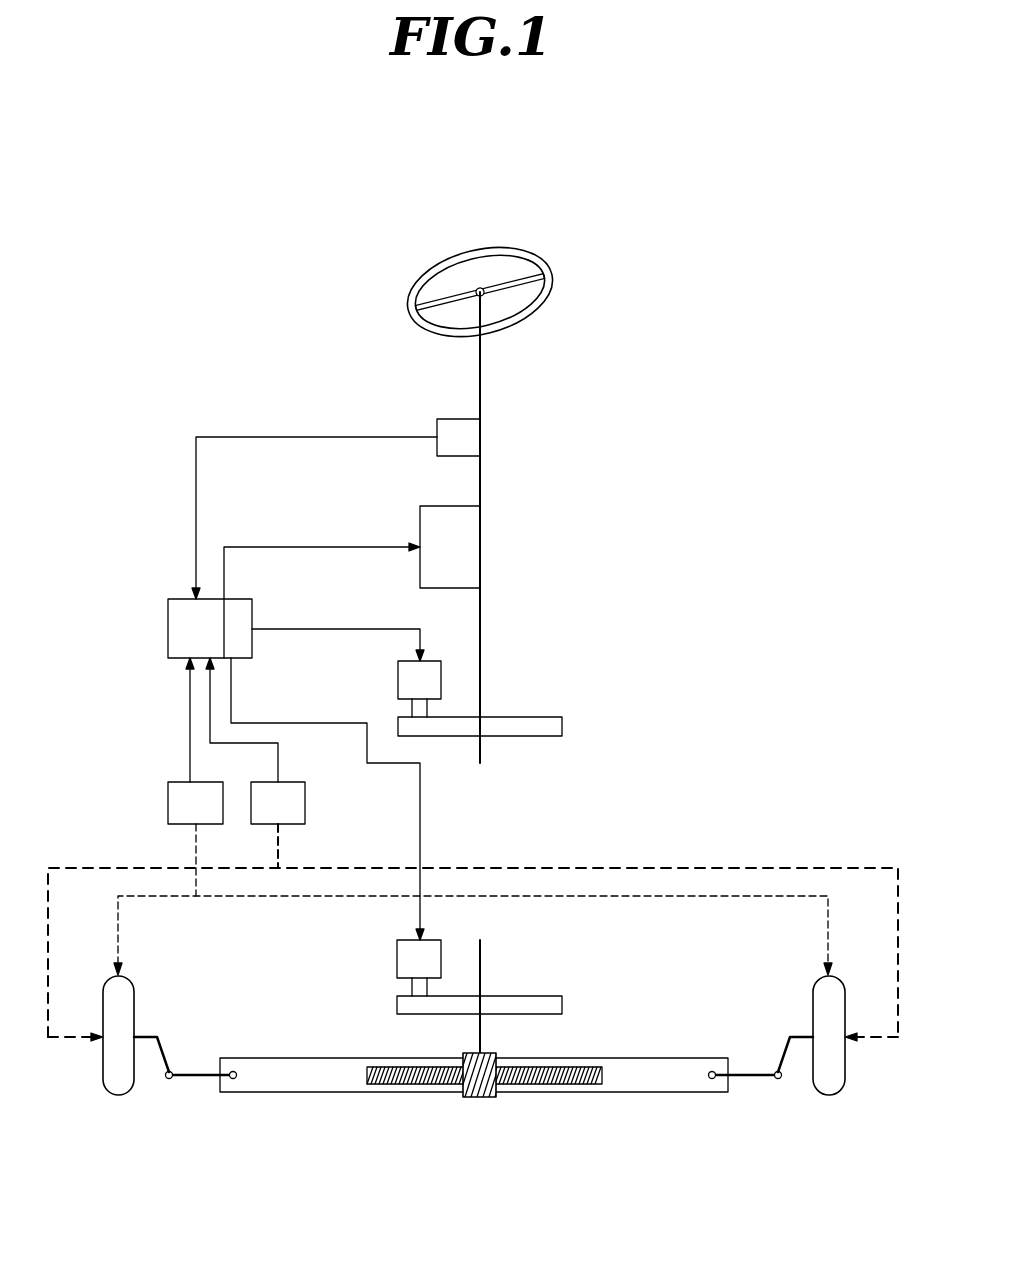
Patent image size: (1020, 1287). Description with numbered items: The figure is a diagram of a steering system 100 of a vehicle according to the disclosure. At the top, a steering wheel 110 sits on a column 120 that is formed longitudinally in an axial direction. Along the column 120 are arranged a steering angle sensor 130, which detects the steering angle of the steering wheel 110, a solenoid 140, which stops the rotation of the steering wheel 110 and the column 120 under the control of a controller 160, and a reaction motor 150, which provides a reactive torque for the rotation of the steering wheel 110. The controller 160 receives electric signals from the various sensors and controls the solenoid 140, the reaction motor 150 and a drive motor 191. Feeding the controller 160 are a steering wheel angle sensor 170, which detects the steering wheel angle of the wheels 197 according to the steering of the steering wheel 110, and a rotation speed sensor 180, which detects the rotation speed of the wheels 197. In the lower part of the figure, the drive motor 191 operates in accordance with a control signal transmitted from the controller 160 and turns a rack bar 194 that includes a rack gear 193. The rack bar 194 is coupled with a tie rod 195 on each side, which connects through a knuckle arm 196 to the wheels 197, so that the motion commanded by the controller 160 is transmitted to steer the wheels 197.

The steering system 100 is at (178, 224).
The steering wheel 110 is at (467, 249).
The column 120 is at (480, 361).
The steering angle sensor 130 is at (437, 419).
The solenoid 140 is at (420, 518).
The reaction motor 150 is at (398, 681).
The controller 160 is at (168, 629).
The steering wheel angle sensor 170 is at (168, 802).
The rotation speed sensor 180 is at (305, 802).
The drive motor 191 is at (397, 959).
The rack gear 193 is at (367, 1073).
The rack bar 194 is at (283, 1093).
The tie rod 195 is at (194, 1079).
The knuckle arm 196 is at (147, 1036).
The wheels 197 is at (118, 1097).